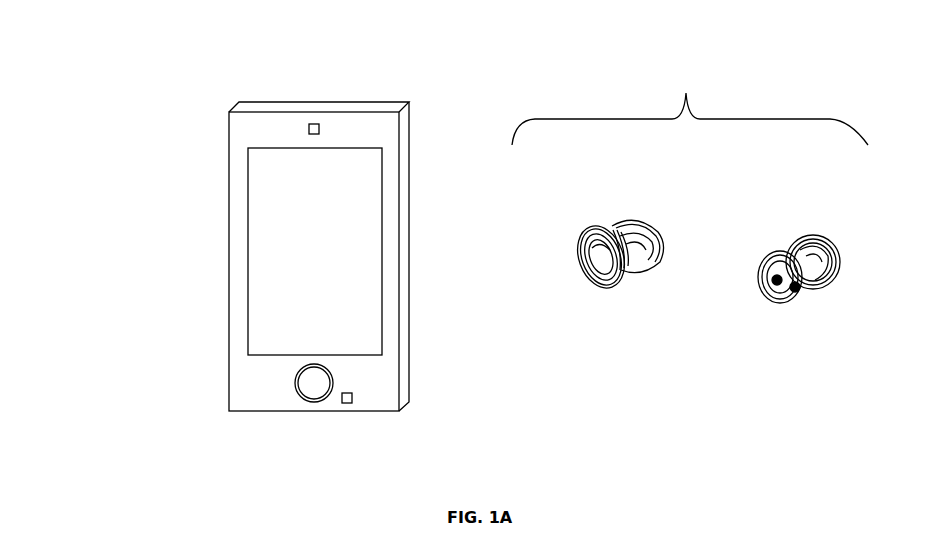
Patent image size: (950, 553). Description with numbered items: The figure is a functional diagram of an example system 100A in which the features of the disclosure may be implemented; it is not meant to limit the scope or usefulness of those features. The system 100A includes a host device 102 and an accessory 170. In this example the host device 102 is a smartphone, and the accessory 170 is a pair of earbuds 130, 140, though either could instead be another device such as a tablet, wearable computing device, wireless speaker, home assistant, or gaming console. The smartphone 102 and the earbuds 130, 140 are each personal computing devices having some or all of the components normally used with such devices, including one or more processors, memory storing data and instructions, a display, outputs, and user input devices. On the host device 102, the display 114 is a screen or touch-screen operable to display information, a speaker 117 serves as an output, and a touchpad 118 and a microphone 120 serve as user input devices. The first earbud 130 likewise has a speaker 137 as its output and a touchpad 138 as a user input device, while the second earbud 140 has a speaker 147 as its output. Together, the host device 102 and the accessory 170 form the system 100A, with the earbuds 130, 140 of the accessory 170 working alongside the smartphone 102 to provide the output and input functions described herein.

The system 100A is at (122, 77).
The host device 102 is at (269, 99).
The display 114 is at (248, 258).
The speaker 117 is at (318, 124).
The touchpad 118 is at (318, 380).
The microphone 120 is at (342, 403).
The accessory 170 is at (690, 106).
The earbud 130 is at (624, 258).
The speaker 137 is at (660, 250).
The touchpad 138 is at (601, 258).
The earbud 140 is at (785, 268).
The speaker 147 is at (797, 297).